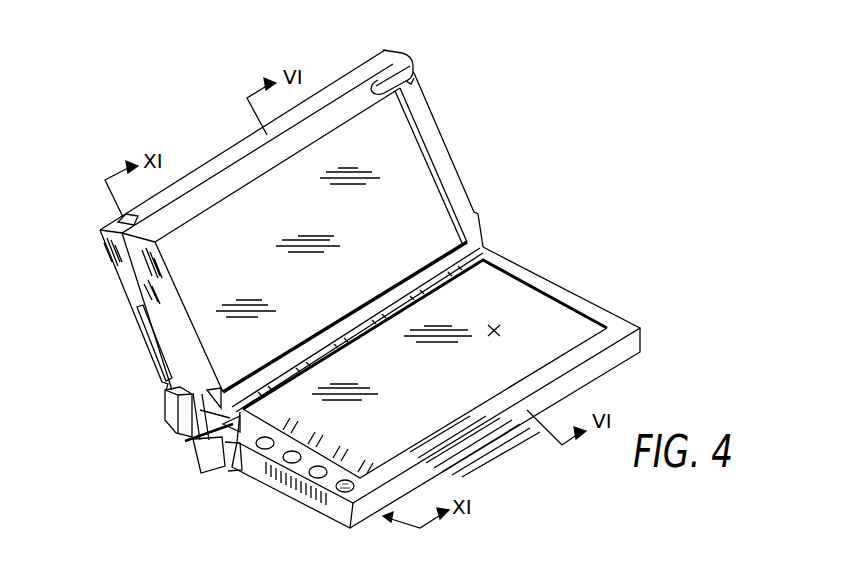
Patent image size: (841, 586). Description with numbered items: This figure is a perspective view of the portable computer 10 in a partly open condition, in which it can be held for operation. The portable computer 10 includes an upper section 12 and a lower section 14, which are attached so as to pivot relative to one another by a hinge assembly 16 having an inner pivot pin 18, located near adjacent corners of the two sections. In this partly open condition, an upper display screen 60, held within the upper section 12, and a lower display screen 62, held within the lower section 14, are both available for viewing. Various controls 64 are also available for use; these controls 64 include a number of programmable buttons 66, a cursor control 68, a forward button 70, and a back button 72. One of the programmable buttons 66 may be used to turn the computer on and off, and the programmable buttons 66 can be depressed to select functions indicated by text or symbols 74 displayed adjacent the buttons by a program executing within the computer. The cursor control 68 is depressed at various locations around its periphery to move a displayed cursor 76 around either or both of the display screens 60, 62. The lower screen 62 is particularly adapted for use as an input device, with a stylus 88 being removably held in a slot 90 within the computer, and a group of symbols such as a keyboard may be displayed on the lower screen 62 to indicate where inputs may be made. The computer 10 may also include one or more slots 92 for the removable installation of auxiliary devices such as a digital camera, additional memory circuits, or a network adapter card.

The portable computer 10 is at (93, 230).
The upper section 12 is at (462, 172).
The lower section 14 is at (604, 376).
The hinge assembly 16 is at (178, 438).
The inner pivot pin 18 is at (187, 407).
The upper display screen 60 is at (248, 210).
The lower display screen 62 is at (410, 419).
The controls 64 is at (404, 534).
The programmable buttons 66 is at (268, 449).
The cursor control 68 is at (342, 492).
The forward button 70 is at (188, 404).
The back button 72 is at (230, 466).
The text or symbols 74 is at (368, 478).
The displayed cursor 76 is at (494, 325).
The stylus 88 is at (414, 66).
The slot 90 is at (393, 65).
The slots 92 is at (146, 345).